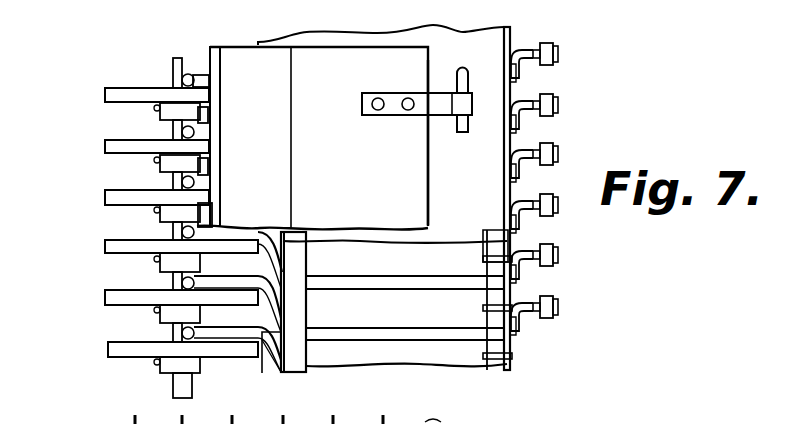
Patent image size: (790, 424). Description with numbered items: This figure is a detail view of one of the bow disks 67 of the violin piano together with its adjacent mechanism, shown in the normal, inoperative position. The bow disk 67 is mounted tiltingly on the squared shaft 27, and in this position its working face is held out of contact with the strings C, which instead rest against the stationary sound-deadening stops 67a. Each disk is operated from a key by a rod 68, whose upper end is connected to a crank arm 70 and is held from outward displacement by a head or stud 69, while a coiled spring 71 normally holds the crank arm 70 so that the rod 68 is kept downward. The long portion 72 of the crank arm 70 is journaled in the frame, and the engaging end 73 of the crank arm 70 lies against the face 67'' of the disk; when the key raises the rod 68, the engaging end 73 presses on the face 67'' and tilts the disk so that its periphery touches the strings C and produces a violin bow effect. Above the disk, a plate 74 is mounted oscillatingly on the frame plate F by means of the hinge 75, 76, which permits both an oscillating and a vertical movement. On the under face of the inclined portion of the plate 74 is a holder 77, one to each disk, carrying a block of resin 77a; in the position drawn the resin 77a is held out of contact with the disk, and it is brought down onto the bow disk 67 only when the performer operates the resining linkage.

The bow disk 67 is at (149, 224).
The face of bow disk 67'' is at (225, 43).
The sound-deadening stop 67a is at (165, 212).
The shaft 27 is at (175, 178).
The strings C is at (158, 108).
The plate 74 is at (247, 64).
The holder 77 is at (355, 62).
The block of resin 77a is at (203, 112).
The engaging end of crank 73 is at (235, 230).
The long portion of crank arm 72 is at (390, 292).
The hinge 75 is at (430, 96).
The hinge 76 is at (470, 62).
The head or stud 69 is at (560, 97).
The rod 68 is at (547, 143).
The crank arm 70 is at (527, 247).
The coiled spring 71 is at (533, 310).
The plate F is at (451, 142).